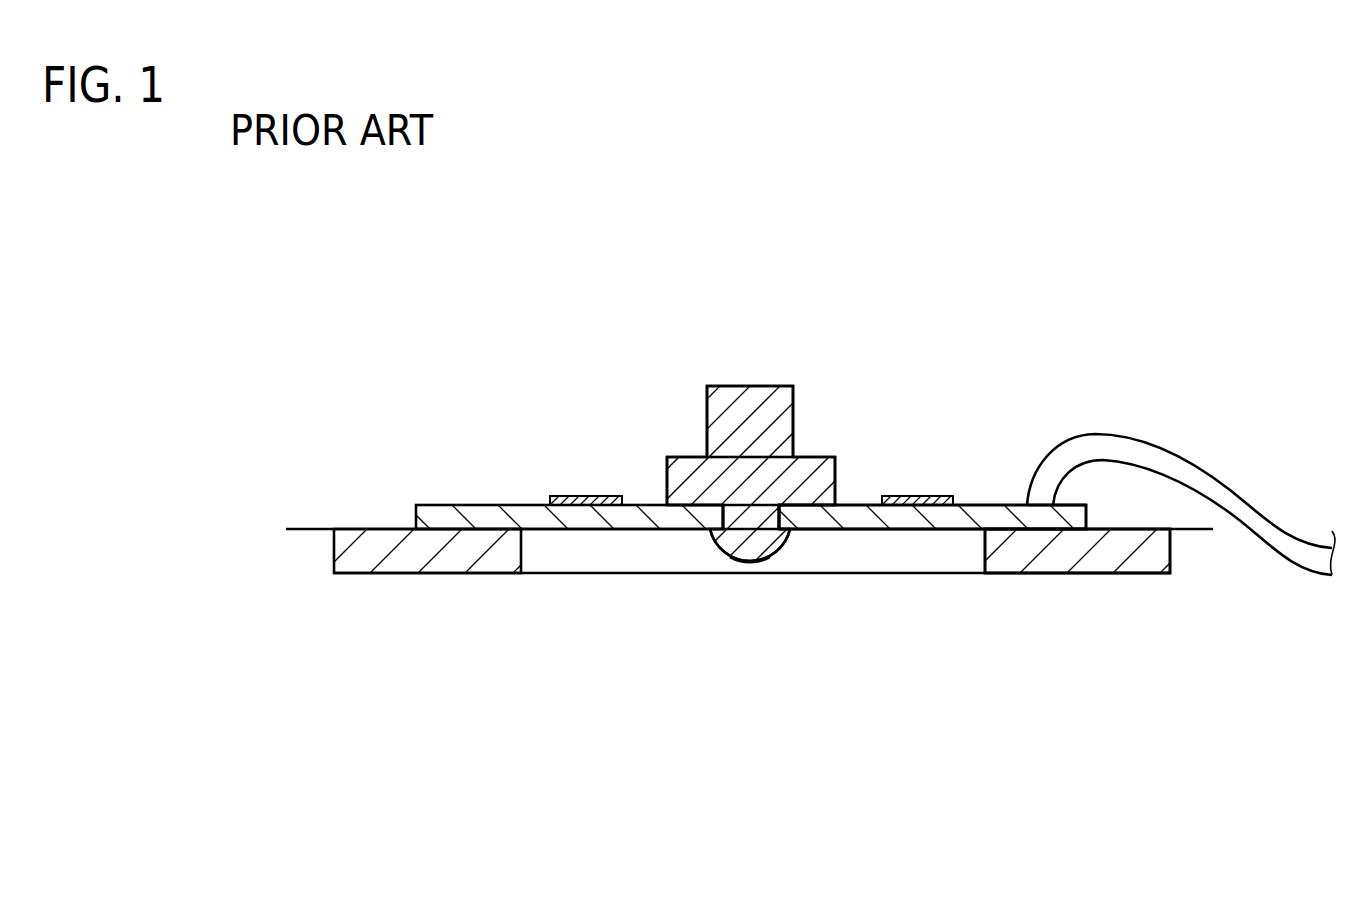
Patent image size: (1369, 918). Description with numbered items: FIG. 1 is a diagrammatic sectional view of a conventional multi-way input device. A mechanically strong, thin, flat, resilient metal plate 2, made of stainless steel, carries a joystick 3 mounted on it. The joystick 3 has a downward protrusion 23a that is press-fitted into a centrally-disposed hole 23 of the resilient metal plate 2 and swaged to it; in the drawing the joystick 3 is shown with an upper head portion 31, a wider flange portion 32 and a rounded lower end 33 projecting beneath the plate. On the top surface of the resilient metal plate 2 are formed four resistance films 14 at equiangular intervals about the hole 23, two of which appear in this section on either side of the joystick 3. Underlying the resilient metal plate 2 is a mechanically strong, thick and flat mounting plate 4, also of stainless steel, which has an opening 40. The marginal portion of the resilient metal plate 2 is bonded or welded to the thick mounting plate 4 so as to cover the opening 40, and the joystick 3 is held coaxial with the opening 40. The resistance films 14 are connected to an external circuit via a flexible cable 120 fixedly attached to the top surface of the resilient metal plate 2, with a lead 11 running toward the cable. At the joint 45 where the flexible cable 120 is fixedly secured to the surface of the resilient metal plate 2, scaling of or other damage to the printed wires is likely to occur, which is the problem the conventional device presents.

The resilient metal plate 2 is at (449, 505).
The joystick 3 is at (751, 490).
The mounting plate 4 is at (1033, 574).
The wiring 11 is at (995, 504).
The resistance films 14 is at (572, 496).
The hole 23 is at (725, 517).
The downward protrusion 23a is at (753, 520).
The head portion 31 is at (793, 417).
The flange portion 32 is at (835, 463).
The tip end 33 is at (742, 555).
The opening 40 is at (985, 552).
The joint 45 is at (1035, 504).
The flexible cable 120 is at (1220, 473).